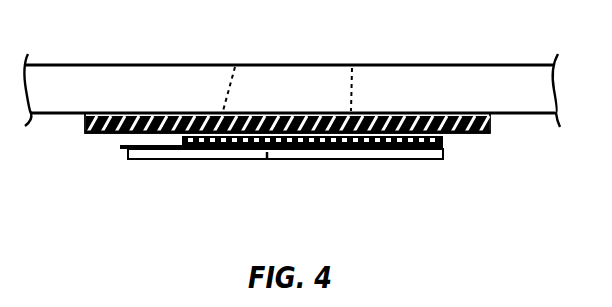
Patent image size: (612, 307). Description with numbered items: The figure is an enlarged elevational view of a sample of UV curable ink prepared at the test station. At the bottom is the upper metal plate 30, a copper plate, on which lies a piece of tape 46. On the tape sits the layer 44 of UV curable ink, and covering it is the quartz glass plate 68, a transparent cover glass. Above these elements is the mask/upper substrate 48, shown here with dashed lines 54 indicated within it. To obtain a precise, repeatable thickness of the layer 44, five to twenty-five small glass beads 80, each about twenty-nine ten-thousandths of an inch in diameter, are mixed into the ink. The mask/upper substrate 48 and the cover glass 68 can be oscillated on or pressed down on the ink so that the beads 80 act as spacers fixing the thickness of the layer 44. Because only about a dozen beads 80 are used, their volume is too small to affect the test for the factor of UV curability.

The upper metal plate 30 is at (425, 160).
The layer of UV curable ink 44 is at (443, 150).
The piece of tape 46 is at (120, 147).
The mask/upper substrate 48 is at (480, 66).
The vacuum ports 54 is at (235, 64).
The quartz glass plate 68 is at (490, 127).
The glass beads 80 is at (267, 158).